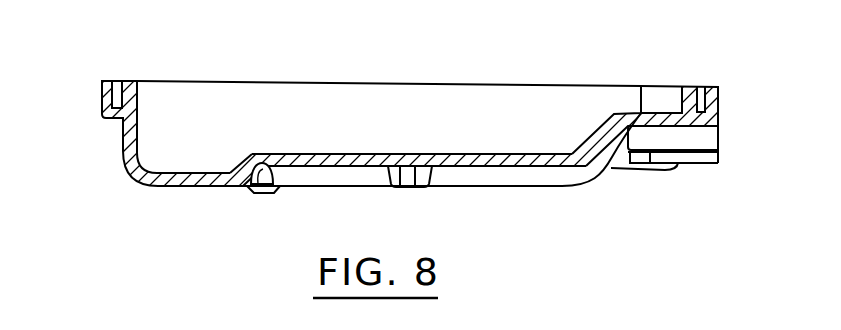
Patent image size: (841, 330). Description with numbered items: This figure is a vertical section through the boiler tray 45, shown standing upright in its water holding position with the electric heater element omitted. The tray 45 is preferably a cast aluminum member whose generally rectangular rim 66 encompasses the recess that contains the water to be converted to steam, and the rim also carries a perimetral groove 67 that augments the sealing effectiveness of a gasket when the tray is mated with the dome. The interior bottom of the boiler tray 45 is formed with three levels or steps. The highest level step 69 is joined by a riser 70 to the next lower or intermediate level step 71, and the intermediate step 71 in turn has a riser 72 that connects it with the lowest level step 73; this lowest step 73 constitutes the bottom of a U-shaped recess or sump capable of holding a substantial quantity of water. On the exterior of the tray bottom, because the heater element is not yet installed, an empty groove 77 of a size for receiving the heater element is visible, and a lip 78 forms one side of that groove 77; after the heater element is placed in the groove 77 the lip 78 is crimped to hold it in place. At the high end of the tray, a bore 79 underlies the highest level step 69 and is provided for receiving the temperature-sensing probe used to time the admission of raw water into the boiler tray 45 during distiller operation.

The boiler tray 45 is at (113, 168).
The rim 66 is at (720, 88).
The slot 67 is at (708, 86).
The highest level step 69 is at (642, 88).
The riser 70 is at (587, 130).
The intermediate level step 71 is at (407, 160).
The riser 72 is at (246, 160).
The lowest level step 73 is at (164, 174).
The groove 77 is at (258, 181).
The lip 78 is at (275, 187).
The bore 79 is at (700, 142).